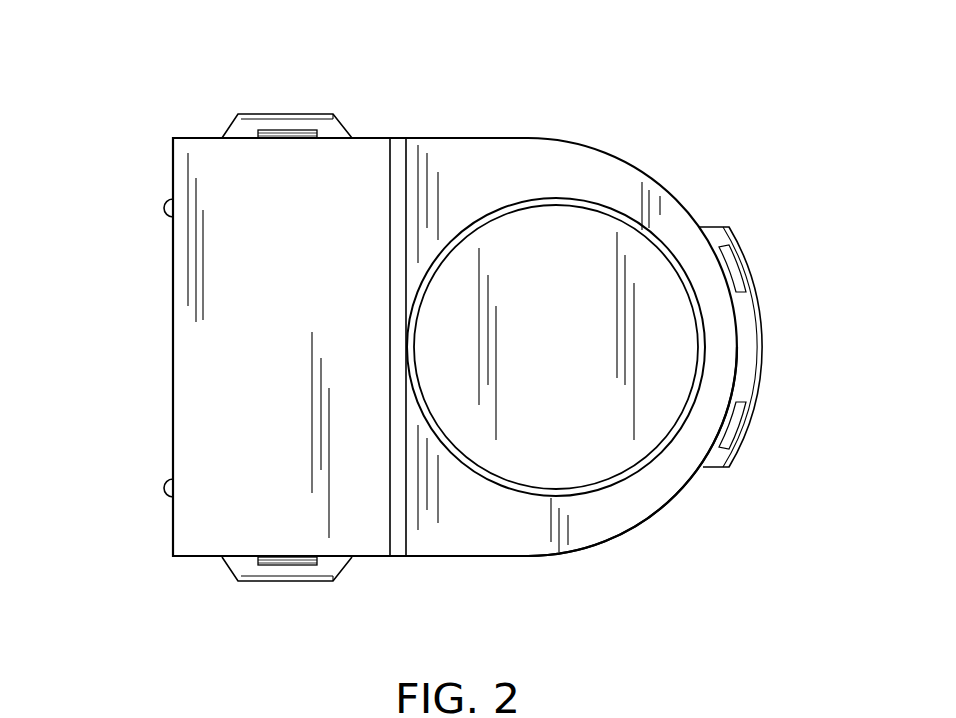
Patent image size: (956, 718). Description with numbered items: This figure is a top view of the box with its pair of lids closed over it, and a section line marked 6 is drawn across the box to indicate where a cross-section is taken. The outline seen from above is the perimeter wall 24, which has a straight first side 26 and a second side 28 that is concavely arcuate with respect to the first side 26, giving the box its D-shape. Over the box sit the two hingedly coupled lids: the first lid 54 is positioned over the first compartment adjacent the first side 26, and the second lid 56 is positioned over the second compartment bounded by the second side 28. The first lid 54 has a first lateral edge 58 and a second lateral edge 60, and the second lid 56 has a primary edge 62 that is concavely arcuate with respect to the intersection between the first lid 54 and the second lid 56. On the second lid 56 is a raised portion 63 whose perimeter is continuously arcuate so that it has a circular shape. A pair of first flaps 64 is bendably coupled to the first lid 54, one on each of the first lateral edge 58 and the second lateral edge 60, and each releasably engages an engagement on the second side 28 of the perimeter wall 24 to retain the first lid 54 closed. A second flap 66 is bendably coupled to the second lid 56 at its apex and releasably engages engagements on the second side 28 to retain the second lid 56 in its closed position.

The perimeter wall 24 is at (488, 138).
The first side 26 is at (173, 405).
The second side 28 is at (663, 507).
The first lid 54 is at (198, 530).
The second lid 56 is at (478, 540).
The first lateral edge 58 is at (372, 560).
The second lateral edge 60 is at (369, 138).
The primary edge 62 is at (660, 213).
The raised portion 63 is at (595, 212).
The first flaps 64 is at (255, 112).
The second flap 66 is at (748, 430).
The section line 6- 6 is at (826, 280).